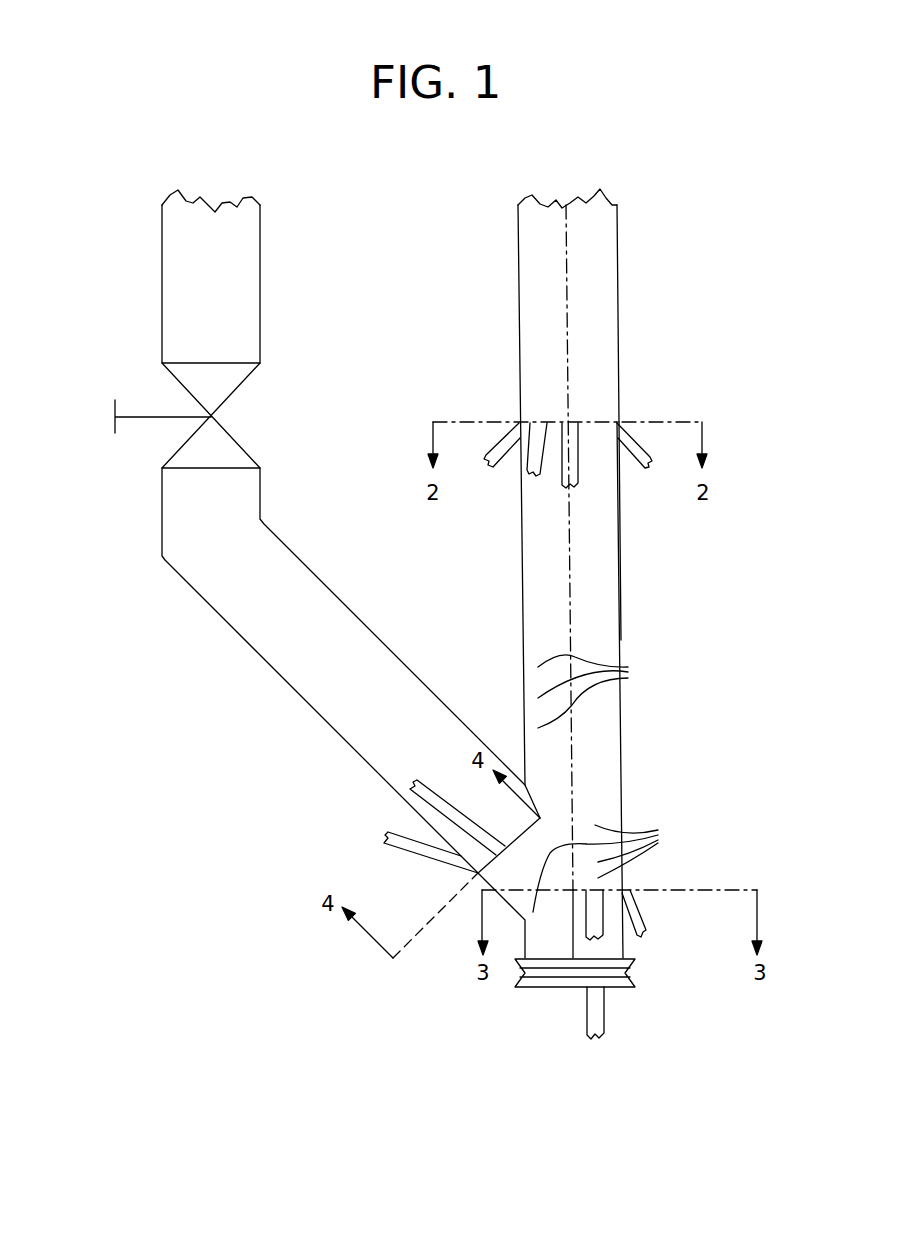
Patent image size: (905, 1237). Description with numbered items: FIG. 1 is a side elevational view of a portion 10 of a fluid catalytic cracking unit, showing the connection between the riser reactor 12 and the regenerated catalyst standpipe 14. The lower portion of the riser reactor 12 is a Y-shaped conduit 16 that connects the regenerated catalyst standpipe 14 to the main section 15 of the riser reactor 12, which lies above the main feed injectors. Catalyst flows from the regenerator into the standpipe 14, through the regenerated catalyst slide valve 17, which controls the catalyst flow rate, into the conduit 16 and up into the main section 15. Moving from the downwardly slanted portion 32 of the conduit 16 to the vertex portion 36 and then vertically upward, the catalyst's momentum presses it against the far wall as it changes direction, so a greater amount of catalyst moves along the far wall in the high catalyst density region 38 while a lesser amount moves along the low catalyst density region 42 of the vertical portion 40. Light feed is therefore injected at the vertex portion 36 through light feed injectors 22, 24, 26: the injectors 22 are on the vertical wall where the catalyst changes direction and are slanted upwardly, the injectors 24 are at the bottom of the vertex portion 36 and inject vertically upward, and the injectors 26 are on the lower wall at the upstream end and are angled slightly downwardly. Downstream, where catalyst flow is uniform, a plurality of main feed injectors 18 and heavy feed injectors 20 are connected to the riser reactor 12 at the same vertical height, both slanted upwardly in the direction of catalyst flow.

The portion of FCC unit 10 is at (655, 376).
The riser reactor 12 is at (620, 302).
The regenerated catalyst standpipe 14 is at (162, 298).
The main section of riser reactor 15 is at (533, 277).
The Y-shaped conduit 16 is at (268, 663).
The regenerated catalyst slide valve 17 is at (150, 418).
The main feed injectors 18 is at (492, 466).
The heavy feed injectors 20 is at (533, 478).
The light feed injectors 22 is at (641, 936).
The light feed injectors 24 is at (587, 1010).
The light feed injectors 26 is at (393, 834).
The downwardly slanted portion 32 is at (306, 565).
The vertex portion 36 is at (625, 883).
The high catalyst density region 38 is at (610, 867).
The vertical portion 40 is at (622, 620).
The low catalyst density region 42 is at (599, 691).